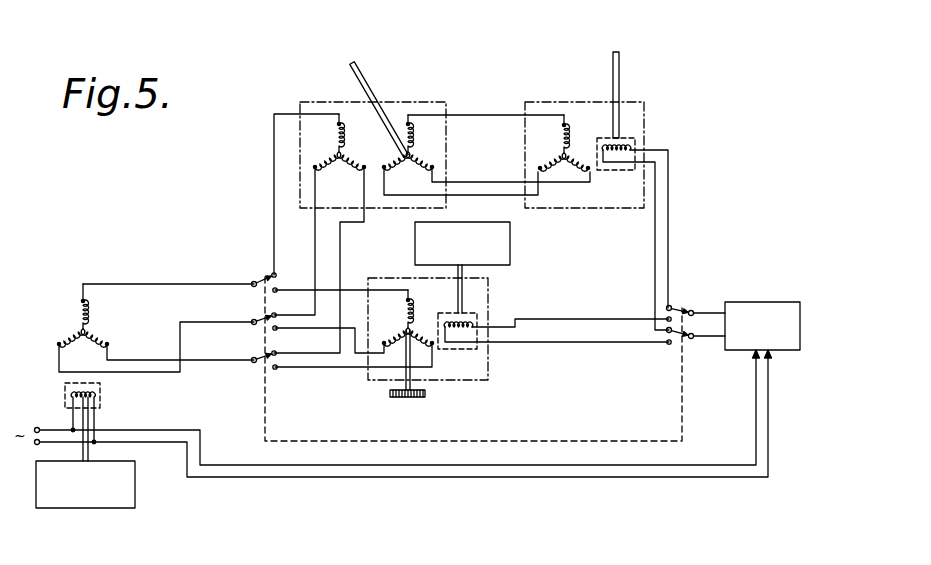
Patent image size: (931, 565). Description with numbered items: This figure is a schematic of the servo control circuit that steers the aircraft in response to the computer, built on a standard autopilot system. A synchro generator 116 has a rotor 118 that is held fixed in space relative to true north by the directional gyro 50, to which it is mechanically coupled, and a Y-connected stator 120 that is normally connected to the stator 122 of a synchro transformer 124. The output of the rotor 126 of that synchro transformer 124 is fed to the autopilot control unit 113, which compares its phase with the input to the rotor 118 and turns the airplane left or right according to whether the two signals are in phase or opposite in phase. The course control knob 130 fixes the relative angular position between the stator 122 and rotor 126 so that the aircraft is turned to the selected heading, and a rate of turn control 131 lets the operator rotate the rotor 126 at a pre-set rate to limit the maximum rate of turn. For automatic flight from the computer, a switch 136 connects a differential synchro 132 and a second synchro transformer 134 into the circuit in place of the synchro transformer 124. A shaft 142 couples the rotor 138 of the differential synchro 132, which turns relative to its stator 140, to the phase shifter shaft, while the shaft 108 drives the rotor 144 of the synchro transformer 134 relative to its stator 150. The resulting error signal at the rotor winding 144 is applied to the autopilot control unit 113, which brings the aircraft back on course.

The directional gyro 50 is at (122, 500).
The shaft 108 is at (610, 75).
The autopilot control unit 113 is at (758, 302).
The synchro generator 116 is at (80, 364).
The rotor 118 is at (100, 397).
The Y-connected stator 120 is at (78, 326).
The stator 122 is at (392, 320).
The synchro transformer 124 is at (444, 300).
The rotor 126 is at (467, 336).
The course control knob 130 is at (388, 393).
The rate of turn control 131 is at (510, 253).
The differential synchro 132 is at (370, 123).
The synchro transformer 134 is at (601, 123).
The switch 136 is at (588, 441).
The rotor 138 is at (412, 142).
The stator 140 is at (336, 136).
The shaft 142 is at (372, 86).
The rotor 144 is at (632, 148).
The stator 150 is at (555, 139).